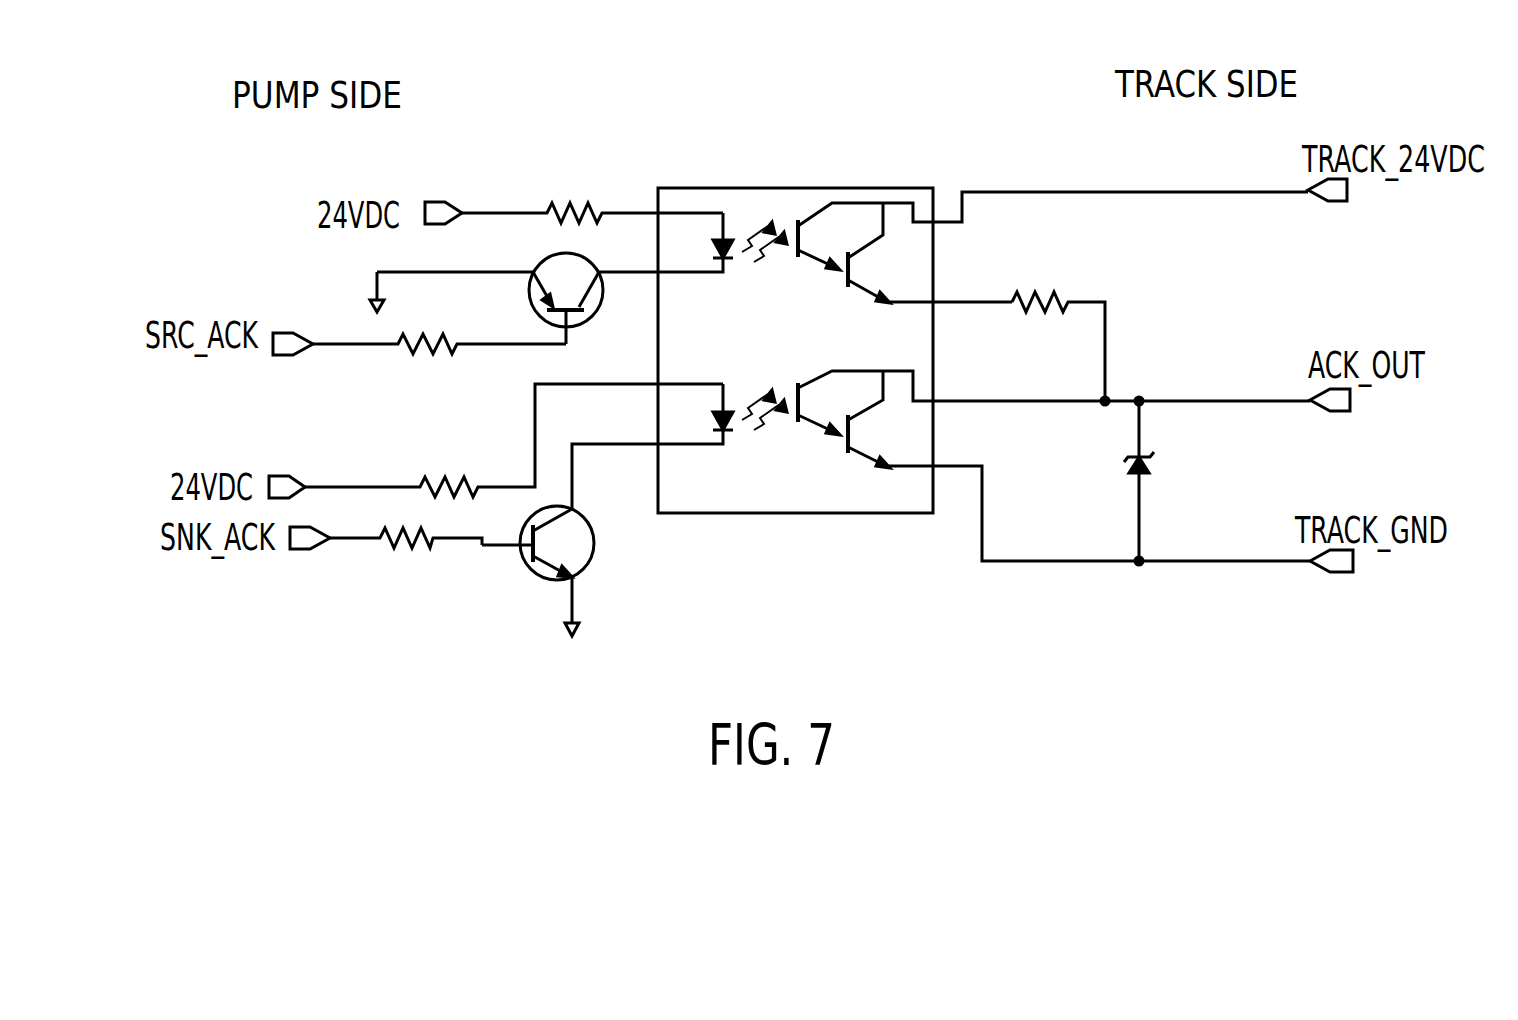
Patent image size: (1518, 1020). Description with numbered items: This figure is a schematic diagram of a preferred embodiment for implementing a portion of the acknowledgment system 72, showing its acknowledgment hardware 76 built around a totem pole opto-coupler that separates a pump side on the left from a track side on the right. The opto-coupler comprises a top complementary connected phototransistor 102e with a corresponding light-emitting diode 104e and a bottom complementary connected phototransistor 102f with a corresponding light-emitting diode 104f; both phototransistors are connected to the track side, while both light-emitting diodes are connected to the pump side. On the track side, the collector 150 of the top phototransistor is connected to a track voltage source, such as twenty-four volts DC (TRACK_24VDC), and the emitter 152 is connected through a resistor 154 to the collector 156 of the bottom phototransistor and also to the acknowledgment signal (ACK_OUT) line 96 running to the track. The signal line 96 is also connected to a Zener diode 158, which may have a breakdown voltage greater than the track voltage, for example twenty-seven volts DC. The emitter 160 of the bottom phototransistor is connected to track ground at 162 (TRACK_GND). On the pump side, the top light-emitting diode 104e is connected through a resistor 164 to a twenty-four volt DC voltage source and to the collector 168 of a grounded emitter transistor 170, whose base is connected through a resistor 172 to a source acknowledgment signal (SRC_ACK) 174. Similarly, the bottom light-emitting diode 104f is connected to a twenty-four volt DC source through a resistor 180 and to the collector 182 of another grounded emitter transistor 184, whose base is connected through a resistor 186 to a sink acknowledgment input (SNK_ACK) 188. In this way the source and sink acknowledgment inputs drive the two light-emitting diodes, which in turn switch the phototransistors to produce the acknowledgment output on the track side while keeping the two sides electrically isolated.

The acknowledgment system 72 is at (945, 680).
The acknowledgment hardware 76 is at (876, 105).
The acknowledgment signal (ACK_OUT) line 96 is at (1200, 401).
The top phototransistor 102e is at (796, 220).
The bottom phototransistor 102f is at (800, 424).
The top light-emitting diode 104e is at (737, 242).
The bottom light-emitting diode 104f is at (737, 425).
The collector of the top phototransistor 150 is at (1052, 192).
The emitter of the top phototransistor 152 is at (958, 300).
The resistor 154 is at (1055, 288).
The collector of the bottom phototransistor 156 is at (1058, 401).
The Zener diode 158 is at (1145, 470).
The emitter of the bottom phototransistor 160 is at (1121, 513).
The track ground (TRACK_GND) 162 is at (1340, 572).
The resistor 164 is at (585, 205).
The collector of transistor 170 168 is at (640, 272).
The grounded emitter transistor 170 is at (527, 296).
The resistor 172 is at (427, 362).
The source acknowledgment signal (SRC_ACK) 174 is at (297, 353).
The resistor 180 is at (445, 478).
The collector of transistor 184 182 is at (593, 447).
The grounded emitter transistor 184 is at (530, 576).
The resistor 186 is at (420, 552).
The sink acknowledgment input (SNK_ACK) 188 is at (308, 548).